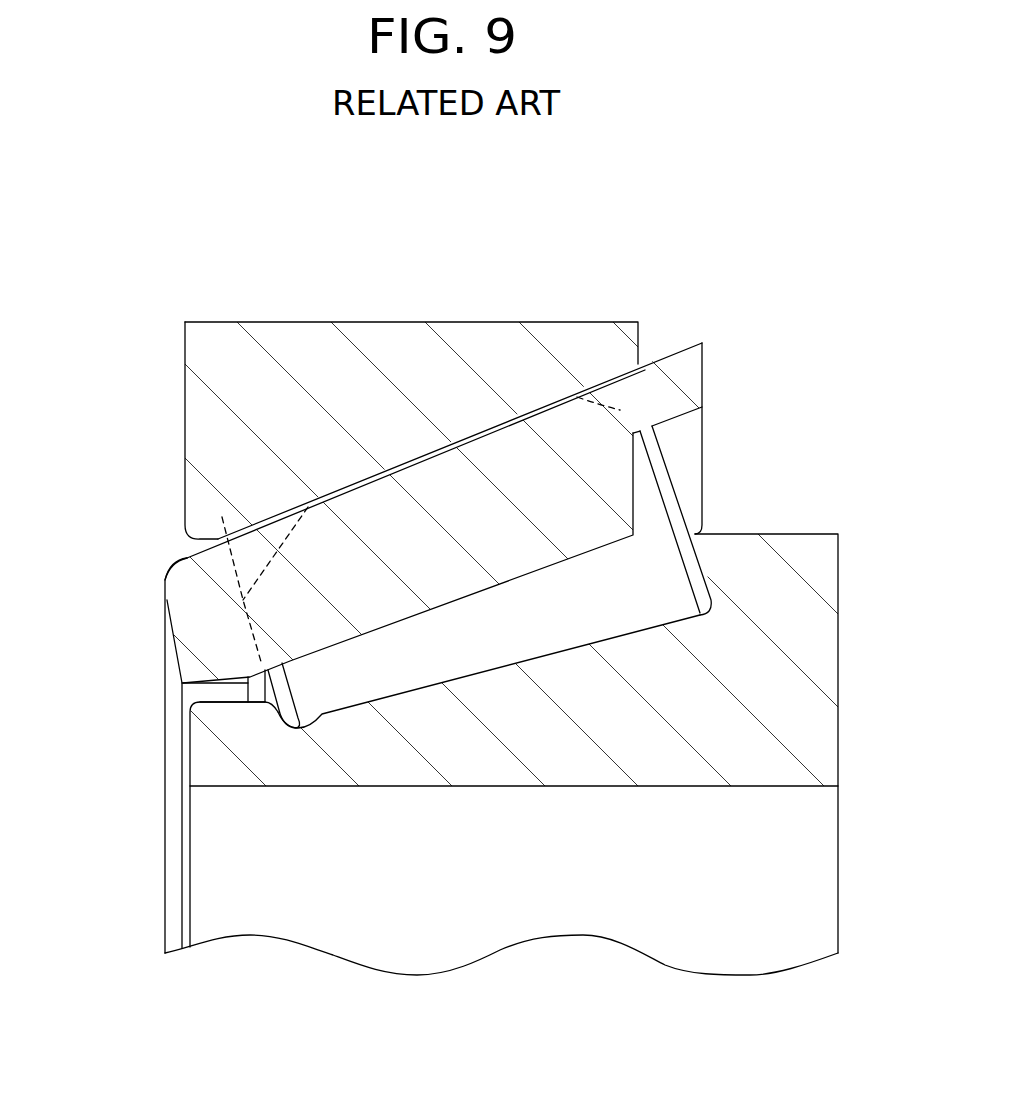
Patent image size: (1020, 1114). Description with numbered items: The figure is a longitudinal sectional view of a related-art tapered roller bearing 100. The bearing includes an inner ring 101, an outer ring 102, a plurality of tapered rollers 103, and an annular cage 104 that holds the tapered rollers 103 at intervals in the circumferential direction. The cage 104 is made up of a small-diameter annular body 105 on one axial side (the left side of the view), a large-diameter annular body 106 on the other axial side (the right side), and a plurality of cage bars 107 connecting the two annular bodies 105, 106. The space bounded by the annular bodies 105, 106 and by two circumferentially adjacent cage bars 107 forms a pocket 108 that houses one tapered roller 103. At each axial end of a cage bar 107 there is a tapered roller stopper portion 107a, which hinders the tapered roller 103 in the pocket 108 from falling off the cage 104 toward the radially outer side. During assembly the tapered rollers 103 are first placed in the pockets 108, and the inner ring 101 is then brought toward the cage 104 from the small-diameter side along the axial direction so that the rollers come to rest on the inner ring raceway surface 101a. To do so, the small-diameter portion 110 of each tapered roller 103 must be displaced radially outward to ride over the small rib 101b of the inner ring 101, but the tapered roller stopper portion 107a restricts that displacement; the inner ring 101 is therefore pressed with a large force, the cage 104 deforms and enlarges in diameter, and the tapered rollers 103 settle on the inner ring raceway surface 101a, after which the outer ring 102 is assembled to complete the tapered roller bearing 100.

The tapered roller bearing 100 is at (375, 568).
The inner ring 101 is at (501, 754).
The inner ring raceway surface 101a is at (413, 682).
The small rib 101b is at (230, 717).
The outer ring 102 is at (260, 348).
The tapered roller 103 is at (610, 600).
The cage 104 is at (166, 561).
The small-diameter annular body 105 is at (193, 602).
The large-diameter annular body 106 is at (677, 382).
The cage bar 107 is at (392, 497).
The tapered roller stopper portion 107a is at (233, 520).
The pocket 108 is at (547, 438).
The small-diameter portion 110 is at (330, 673).